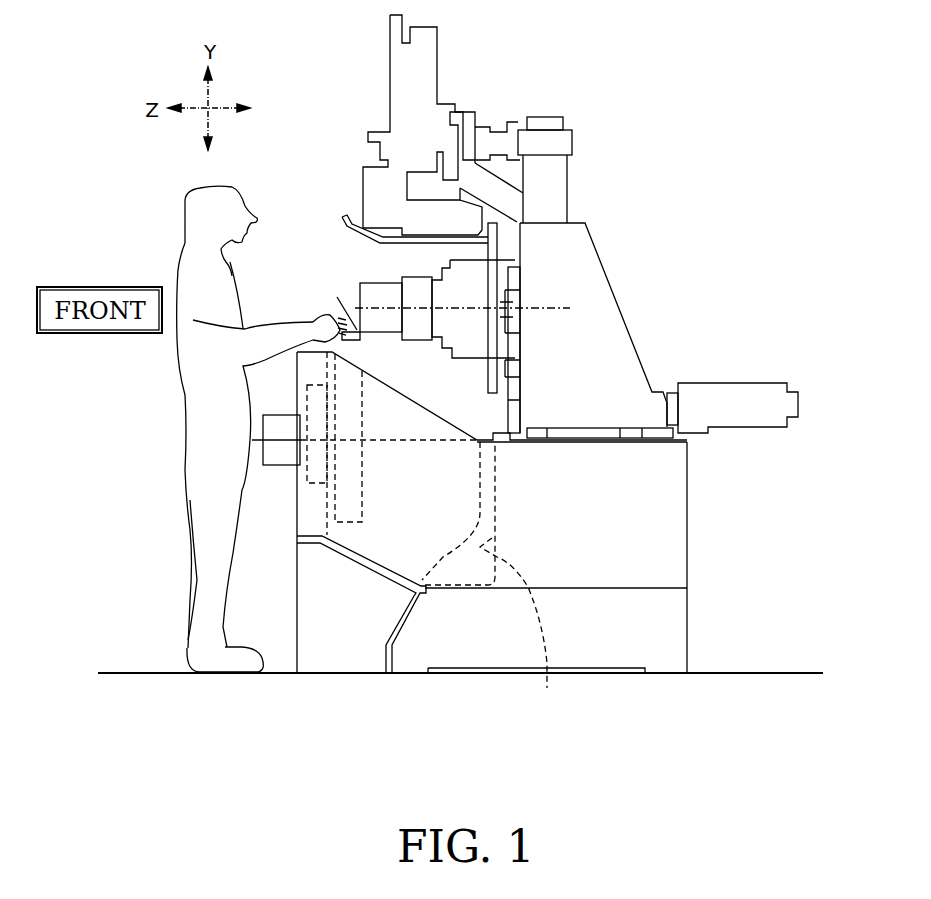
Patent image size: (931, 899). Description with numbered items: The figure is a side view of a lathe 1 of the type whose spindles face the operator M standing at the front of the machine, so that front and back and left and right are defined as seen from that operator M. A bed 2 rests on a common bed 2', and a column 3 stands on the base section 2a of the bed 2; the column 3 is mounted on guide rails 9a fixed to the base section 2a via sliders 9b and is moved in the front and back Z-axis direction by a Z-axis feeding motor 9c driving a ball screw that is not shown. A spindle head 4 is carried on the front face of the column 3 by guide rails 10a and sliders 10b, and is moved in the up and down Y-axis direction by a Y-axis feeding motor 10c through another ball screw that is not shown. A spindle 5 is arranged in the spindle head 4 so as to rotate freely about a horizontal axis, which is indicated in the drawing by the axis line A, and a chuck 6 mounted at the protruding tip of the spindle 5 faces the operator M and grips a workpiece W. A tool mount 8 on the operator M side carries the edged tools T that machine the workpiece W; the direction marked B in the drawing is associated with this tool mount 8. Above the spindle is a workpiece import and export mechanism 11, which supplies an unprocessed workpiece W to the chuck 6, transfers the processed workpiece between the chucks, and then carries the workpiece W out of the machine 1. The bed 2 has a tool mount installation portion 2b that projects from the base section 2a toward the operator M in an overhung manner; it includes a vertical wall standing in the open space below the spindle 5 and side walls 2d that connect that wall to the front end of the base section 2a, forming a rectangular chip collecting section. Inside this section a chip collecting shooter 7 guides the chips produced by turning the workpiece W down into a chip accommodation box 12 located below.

The lathe 1 is at (655, 102).
The bed 2 is at (520, 546).
The common bed 2' is at (728, 625).
The base section 2a is at (665, 508).
The tool mount installation portion 2b is at (361, 657).
The side wall 2d is at (393, 548).
The column 3 is at (513, 377).
The spindle head 4 is at (473, 348).
The spindle 5 is at (437, 347).
The chuck 6 is at (410, 333).
The chip collecting shooter 7 is at (455, 560).
The tool mount 8 is at (282, 482).
The guide rail 9a is at (583, 427).
The slider 9b is at (537, 442).
The Z-axis feeding motor 9c is at (730, 382).
The guide rail 10a is at (520, 275).
The slider 10b is at (513, 318).
The Y-axis feeding motor 10c is at (547, 115).
The workpiece import and export mechanism 11 is at (373, 62).
The chip accommodation box 12 is at (310, 667).
The spindle axis A is at (557, 308).
The axis B is at (277, 438).
The operator M is at (178, 278).
The edged tool T is at (340, 300).
The workpiece W is at (373, 283).